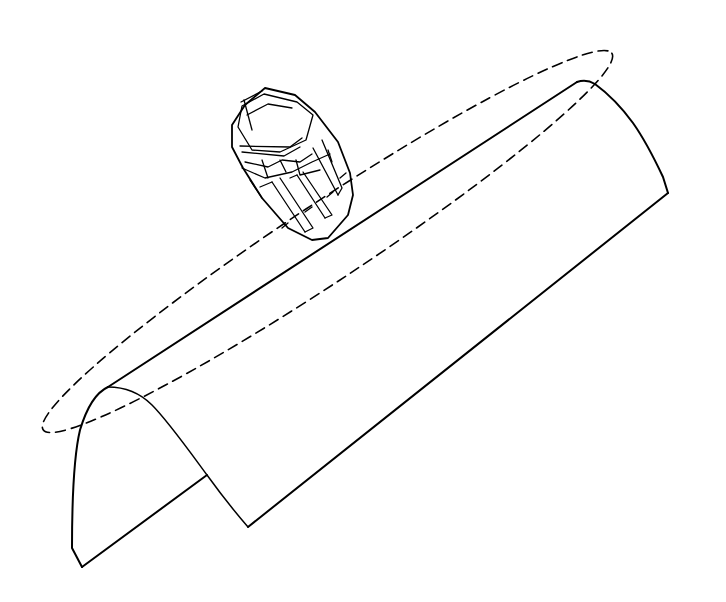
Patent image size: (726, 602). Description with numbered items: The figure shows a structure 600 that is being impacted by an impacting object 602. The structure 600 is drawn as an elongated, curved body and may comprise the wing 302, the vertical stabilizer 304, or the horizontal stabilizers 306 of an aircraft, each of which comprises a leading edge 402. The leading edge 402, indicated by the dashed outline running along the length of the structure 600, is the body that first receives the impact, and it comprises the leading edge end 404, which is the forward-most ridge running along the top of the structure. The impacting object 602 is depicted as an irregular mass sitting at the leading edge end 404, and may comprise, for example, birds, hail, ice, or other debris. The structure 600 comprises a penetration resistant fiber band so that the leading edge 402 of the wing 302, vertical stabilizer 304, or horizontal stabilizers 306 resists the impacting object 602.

The structure 600 is at (118, 110).
The impacting object 602 is at (260, 112).
The leading edge 402 is at (525, 75).
The leading edge end 404 is at (492, 135).
The wing 302 is at (462, 336).
The vertical stabilizer 304 is at (370, 324).
The horizontal stabilizer 306 is at (370, 324).